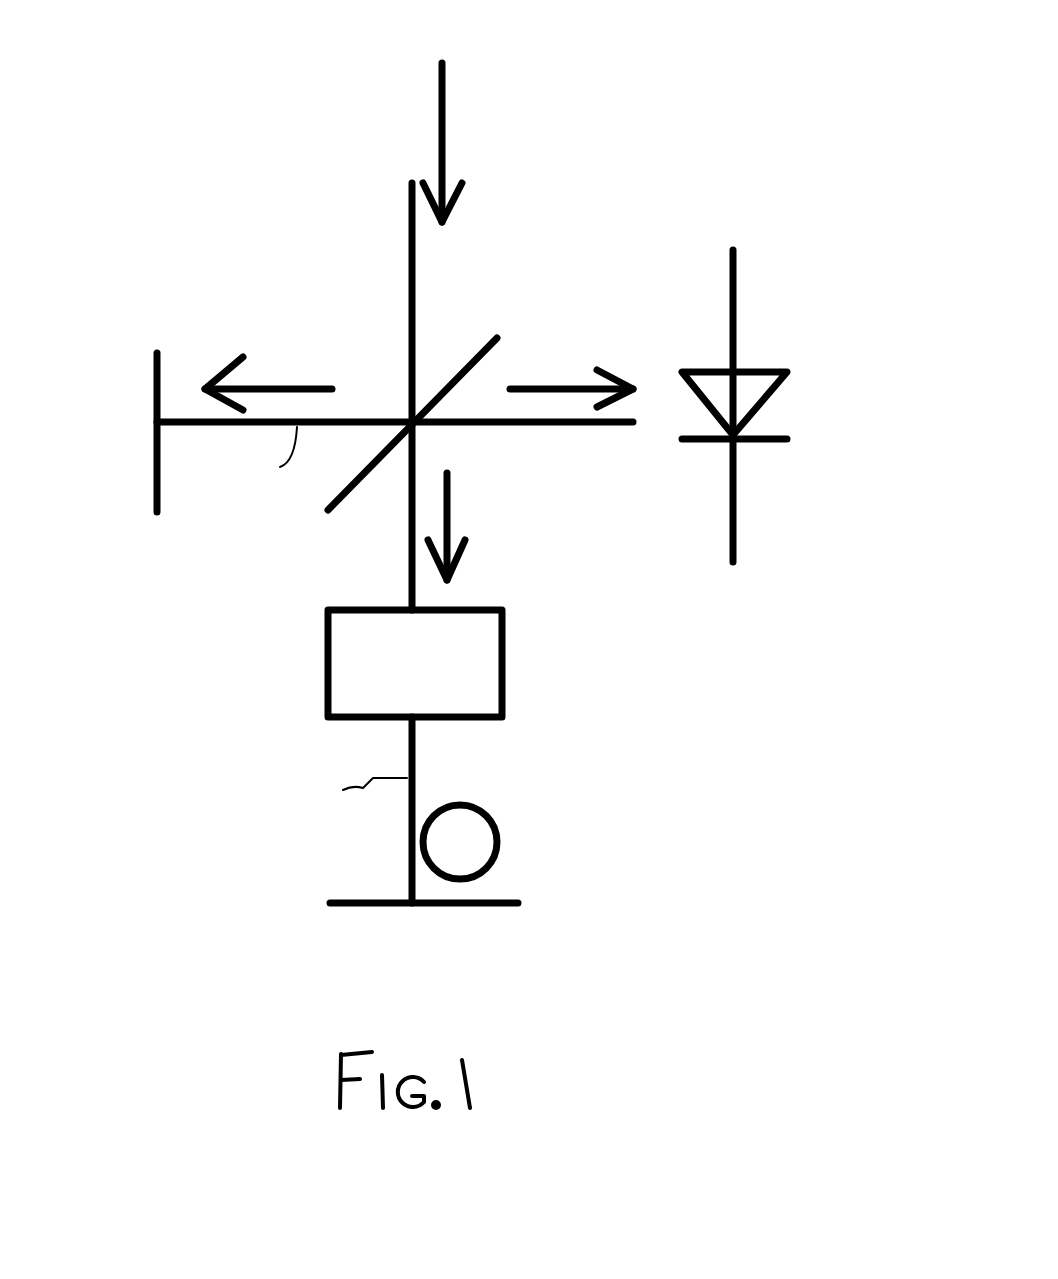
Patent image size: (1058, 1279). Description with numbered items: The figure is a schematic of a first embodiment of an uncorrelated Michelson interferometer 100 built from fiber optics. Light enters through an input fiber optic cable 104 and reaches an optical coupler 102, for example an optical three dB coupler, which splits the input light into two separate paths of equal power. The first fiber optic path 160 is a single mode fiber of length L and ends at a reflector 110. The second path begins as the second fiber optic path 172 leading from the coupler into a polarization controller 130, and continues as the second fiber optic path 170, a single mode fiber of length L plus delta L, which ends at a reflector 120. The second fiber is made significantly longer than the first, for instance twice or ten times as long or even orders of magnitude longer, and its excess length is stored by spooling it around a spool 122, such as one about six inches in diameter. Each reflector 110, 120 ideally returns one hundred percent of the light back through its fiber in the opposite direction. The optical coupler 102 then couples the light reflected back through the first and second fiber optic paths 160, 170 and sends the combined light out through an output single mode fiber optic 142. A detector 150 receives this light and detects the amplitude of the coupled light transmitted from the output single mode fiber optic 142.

The uncorrelated Michelson interferometer 100 is at (780, 60).
The optical coupler 102 is at (471, 350).
The input fiber optic cable 104 is at (414, 265).
The reflector 110 is at (153, 485).
The reflector 120 is at (448, 906).
The spool 122 is at (500, 840).
The polarization controller 130 is at (503, 667).
The output single mode fiber optic 142 is at (545, 428).
The detector 150 is at (790, 408).
The first fiber optic path 160 is at (340, 421).
The second fiber optic path 170 is at (415, 745).
The second fiber optic path 172 is at (412, 572).